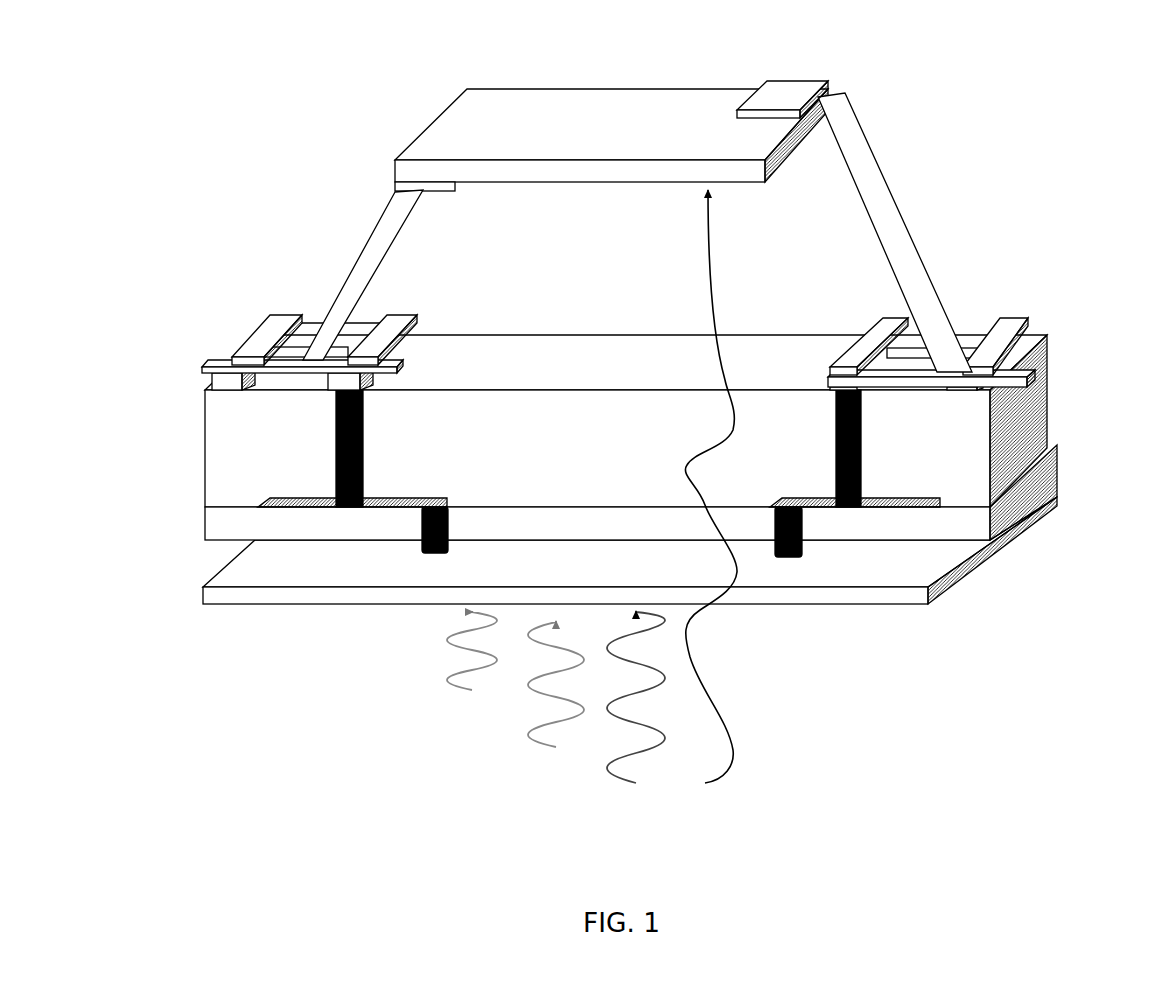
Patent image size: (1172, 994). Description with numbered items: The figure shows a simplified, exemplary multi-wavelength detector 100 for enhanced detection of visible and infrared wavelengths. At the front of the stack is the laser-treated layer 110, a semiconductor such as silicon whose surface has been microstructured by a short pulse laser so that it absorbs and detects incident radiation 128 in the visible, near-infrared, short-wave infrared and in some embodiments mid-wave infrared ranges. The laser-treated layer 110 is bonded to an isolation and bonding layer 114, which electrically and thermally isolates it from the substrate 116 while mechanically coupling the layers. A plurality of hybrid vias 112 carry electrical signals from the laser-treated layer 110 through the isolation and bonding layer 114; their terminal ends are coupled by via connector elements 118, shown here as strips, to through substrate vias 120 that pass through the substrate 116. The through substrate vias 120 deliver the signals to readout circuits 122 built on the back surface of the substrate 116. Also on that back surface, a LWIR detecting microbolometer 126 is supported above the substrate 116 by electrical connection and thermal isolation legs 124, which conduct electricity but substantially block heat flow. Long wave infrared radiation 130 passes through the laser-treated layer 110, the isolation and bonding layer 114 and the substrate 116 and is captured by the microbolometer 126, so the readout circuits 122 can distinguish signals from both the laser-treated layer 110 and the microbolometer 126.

The multi-wavelength detector 100 is at (1024, 101).
The laser-treated layer 110 is at (890, 604).
The hybrid vias 112 is at (421, 548).
The isolation and bonding layer 114 is at (1043, 478).
The substrate 116 is at (1050, 412).
The via connector elements 118 is at (397, 504).
The through substrate vias 120 is at (336, 419).
The readout circuits 122 is at (262, 320).
The electrical connection and thermal isolation legs 124 is at (376, 220).
The LWIR detecting microbolometer 126 is at (610, 183).
The incident radiation 128 is at (596, 819).
The LWIR radiation 130 is at (755, 812).